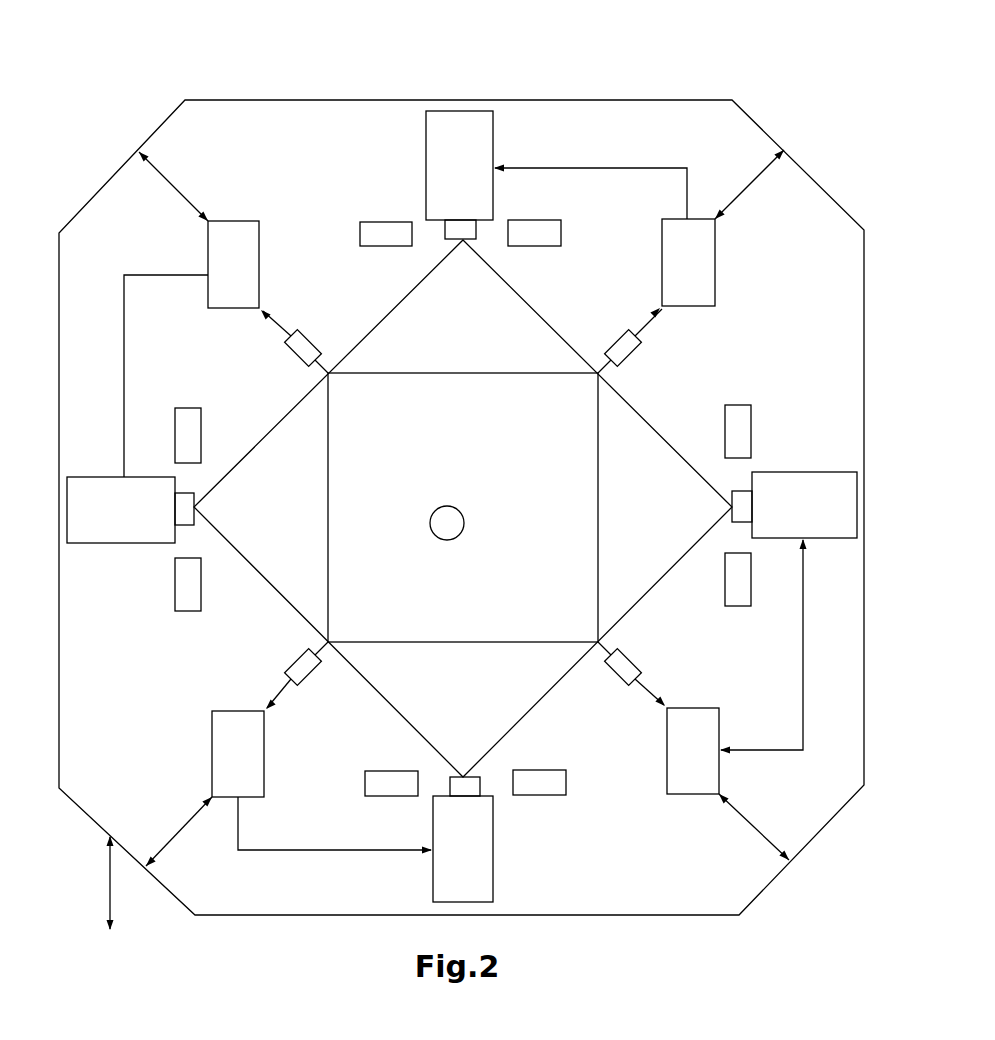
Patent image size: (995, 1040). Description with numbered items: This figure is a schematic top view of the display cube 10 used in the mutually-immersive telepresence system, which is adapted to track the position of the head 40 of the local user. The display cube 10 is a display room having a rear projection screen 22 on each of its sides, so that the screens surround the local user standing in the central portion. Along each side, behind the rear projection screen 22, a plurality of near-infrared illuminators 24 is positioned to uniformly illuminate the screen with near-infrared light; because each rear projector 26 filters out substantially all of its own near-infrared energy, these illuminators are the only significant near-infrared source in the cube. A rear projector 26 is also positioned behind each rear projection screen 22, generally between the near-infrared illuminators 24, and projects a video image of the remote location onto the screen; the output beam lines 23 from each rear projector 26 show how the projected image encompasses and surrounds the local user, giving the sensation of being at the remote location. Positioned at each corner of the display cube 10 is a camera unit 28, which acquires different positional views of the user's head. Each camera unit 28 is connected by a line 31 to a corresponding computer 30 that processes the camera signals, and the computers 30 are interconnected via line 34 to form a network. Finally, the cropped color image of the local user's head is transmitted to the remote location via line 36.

The display cube 10 is at (313, 74).
The rear projection screen 22 is at (405, 372).
The beam lines 23 is at (375, 327).
The near-infrared illuminators 24 is at (386, 222).
The rear projector 26 is at (497, 140).
The camera unit 28 is at (312, 345).
The computer 30 is at (262, 262).
The line 31 is at (125, 355).
The line 34 is at (805, 163).
The line 36 is at (108, 880).
The head 40 is at (448, 541).